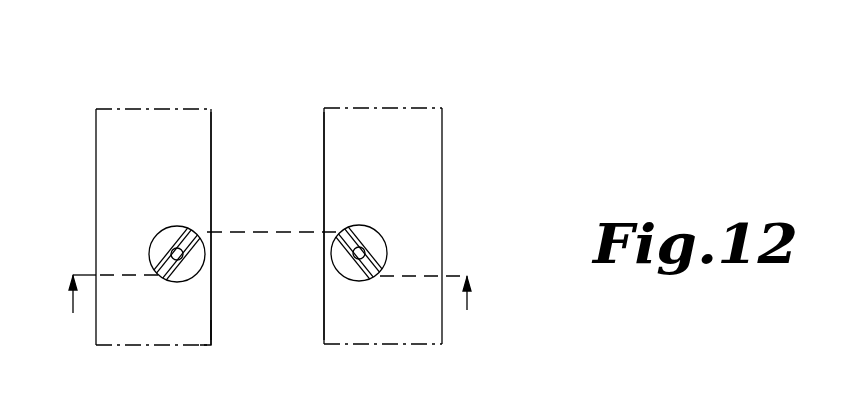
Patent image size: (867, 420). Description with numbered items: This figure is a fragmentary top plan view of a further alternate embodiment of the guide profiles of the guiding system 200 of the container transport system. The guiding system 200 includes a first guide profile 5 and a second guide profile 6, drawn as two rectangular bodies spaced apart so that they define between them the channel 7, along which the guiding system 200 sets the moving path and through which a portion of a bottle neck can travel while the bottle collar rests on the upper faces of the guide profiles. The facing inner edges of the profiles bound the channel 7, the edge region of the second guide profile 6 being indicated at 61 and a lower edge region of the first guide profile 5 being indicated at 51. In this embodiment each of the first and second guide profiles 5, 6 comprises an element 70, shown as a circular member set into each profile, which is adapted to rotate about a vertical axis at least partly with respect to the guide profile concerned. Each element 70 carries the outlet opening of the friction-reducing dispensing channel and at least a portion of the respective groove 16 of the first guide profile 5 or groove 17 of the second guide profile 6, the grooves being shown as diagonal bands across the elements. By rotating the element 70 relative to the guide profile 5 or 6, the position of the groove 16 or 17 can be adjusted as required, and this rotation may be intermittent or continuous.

The guiding system 200 is at (473, 98).
The first guide profile 5 is at (150, 143).
The second guide profile 6 is at (417, 143).
The channel 7 is at (218, 146).
The edge of second panel 61 is at (324, 161).
The lower edge portion of first panel 51 is at (213, 313).
The rotatable element 70 is at (163, 242).
The groove 16 is at (160, 262).
The groove 17 is at (350, 232).